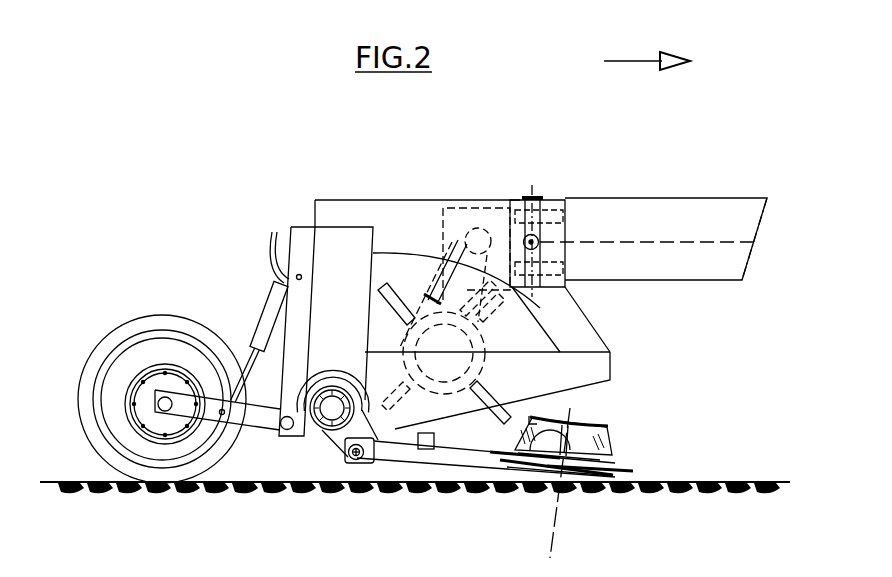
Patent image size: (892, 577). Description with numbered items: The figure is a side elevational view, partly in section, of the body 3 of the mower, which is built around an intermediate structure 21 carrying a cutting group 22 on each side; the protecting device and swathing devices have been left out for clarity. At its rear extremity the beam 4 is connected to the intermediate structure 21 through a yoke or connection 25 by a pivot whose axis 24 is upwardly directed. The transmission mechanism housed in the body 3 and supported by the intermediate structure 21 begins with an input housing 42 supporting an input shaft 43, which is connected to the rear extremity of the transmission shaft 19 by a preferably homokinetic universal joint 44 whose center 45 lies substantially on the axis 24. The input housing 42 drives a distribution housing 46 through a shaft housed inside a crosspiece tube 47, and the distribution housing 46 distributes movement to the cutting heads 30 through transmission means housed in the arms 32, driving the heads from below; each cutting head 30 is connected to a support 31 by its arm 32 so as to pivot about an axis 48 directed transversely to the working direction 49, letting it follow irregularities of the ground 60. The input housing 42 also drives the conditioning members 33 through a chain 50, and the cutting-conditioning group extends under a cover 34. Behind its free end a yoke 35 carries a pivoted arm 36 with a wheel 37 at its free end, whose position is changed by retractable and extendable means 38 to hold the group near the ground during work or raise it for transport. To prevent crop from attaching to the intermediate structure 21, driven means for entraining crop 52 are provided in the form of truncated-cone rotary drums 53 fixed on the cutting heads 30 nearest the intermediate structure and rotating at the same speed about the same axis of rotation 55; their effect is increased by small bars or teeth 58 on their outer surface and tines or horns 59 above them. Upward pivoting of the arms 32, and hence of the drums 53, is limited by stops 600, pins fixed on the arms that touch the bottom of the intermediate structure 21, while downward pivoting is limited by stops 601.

The body 3 is at (205, 193).
The beam 4 is at (722, 215).
The transmission shaft 19 is at (720, 245).
The intermediate structure 21 is at (335, 213).
The cutting group 22 is at (675, 403).
The axis 24 is at (530, 157).
The yoke or connection 25 is at (547, 205).
The cutting head 30 is at (622, 453).
The support 31 is at (315, 436).
The arm 32 is at (481, 463).
The conditioning member 33 is at (492, 361).
The cover 34 is at (517, 302).
The yoke 35 is at (283, 438).
The arm 36 is at (207, 410).
The wheel 37 is at (113, 340).
The retractable and extendable means 38 is at (272, 320).
The input housing 42 is at (455, 240).
The input shaft 43 is at (510, 228).
The universal joint 44 is at (542, 246).
The center of joint 45 is at (538, 242).
The distribution housing 46 is at (372, 462).
The crosspiece tube 47 is at (400, 363).
The axis 48 is at (353, 461).
The working direction 49 is at (632, 60).
The chain 50 is at (490, 305).
The driven means for entraining crop 52 is at (616, 442).
The rotary drum 53 is at (617, 437).
The axis of rotation 55 is at (560, 532).
The small bars or teeth 58 is at (527, 470).
The tines or horns 59 is at (535, 420).
The ground 60 is at (720, 549).
The stop 600 is at (434, 440).
The stop 601 is at (398, 392).